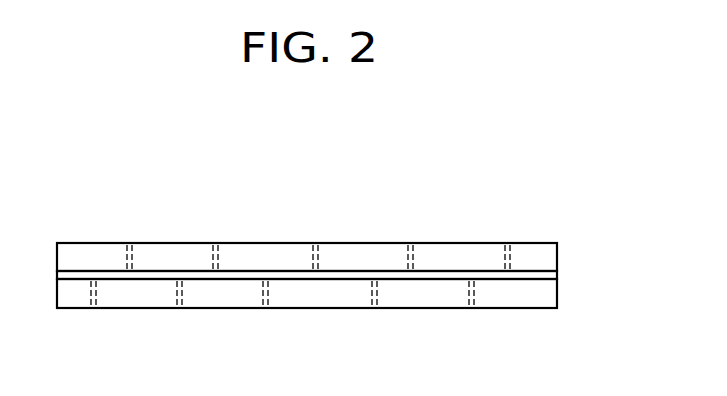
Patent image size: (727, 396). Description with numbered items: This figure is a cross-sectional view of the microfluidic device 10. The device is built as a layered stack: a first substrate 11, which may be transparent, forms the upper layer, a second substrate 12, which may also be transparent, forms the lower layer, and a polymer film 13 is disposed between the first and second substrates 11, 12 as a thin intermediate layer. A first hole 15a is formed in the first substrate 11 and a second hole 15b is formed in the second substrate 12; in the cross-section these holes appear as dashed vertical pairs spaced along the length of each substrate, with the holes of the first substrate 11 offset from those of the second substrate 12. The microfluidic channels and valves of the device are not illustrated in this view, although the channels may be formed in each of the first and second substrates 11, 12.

The microfluidic device 10 is at (332, 256).
The first substrate 11 is at (557, 254).
The second substrate 12 is at (557, 298).
The polymer film 13 is at (557, 276).
The first hole 15a is at (130, 244).
The second hole 15b is at (179, 308).